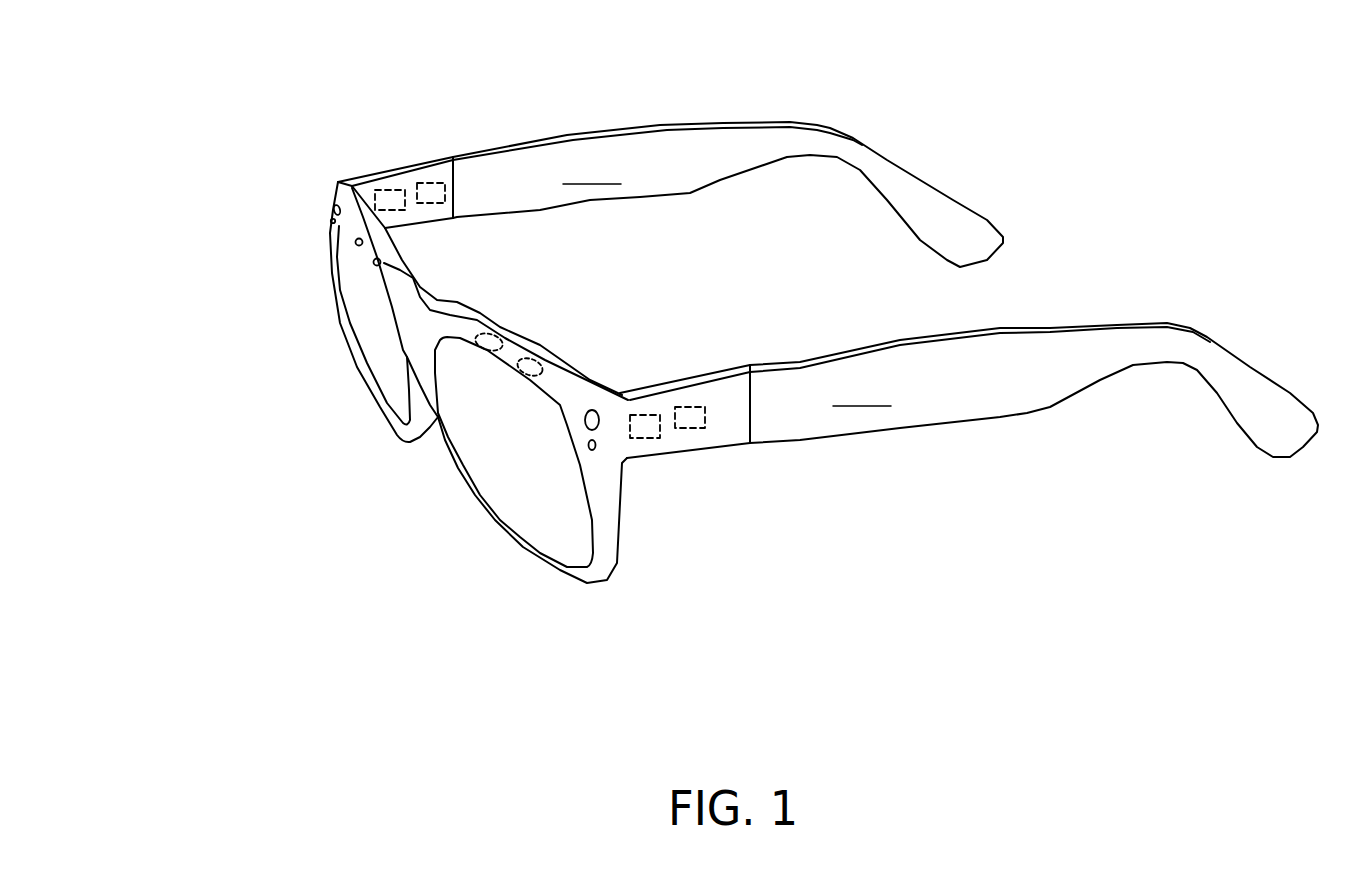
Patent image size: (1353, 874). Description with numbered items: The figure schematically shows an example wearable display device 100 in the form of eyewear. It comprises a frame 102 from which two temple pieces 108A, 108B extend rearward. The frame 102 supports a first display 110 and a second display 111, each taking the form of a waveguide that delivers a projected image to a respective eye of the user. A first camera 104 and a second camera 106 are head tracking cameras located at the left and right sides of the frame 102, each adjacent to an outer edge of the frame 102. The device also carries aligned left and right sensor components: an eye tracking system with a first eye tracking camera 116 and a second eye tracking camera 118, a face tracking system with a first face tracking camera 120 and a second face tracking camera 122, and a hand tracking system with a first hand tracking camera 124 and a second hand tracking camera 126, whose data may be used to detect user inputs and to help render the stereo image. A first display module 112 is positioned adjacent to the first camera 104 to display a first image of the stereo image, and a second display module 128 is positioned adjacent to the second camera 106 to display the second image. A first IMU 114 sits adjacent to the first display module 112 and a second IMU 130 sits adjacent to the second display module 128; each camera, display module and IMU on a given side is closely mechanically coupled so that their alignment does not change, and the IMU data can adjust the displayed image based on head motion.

The wearable display device 100 is at (120, 133).
The frame 102 is at (457, 467).
The first camera 104 is at (593, 408).
The second camera 106 is at (337, 207).
The temple piece 108A is at (670, 194).
The temple piece 108B is at (969, 390).
The first display 110 is at (520, 532).
The second display 111 is at (383, 402).
The first display module 112 is at (648, 438).
The first IMU 114 is at (693, 428).
The first eye tracking camera 116 is at (538, 360).
The second eye tracking camera 118 is at (362, 238).
The first face tracking camera 120 is at (490, 335).
The second face tracking camera 122 is at (380, 260).
The first hand tracking camera 124 is at (595, 445).
The second hand tracking camera 126 is at (332, 220).
The second display module 128 is at (380, 188).
The second IMU 130 is at (435, 182).